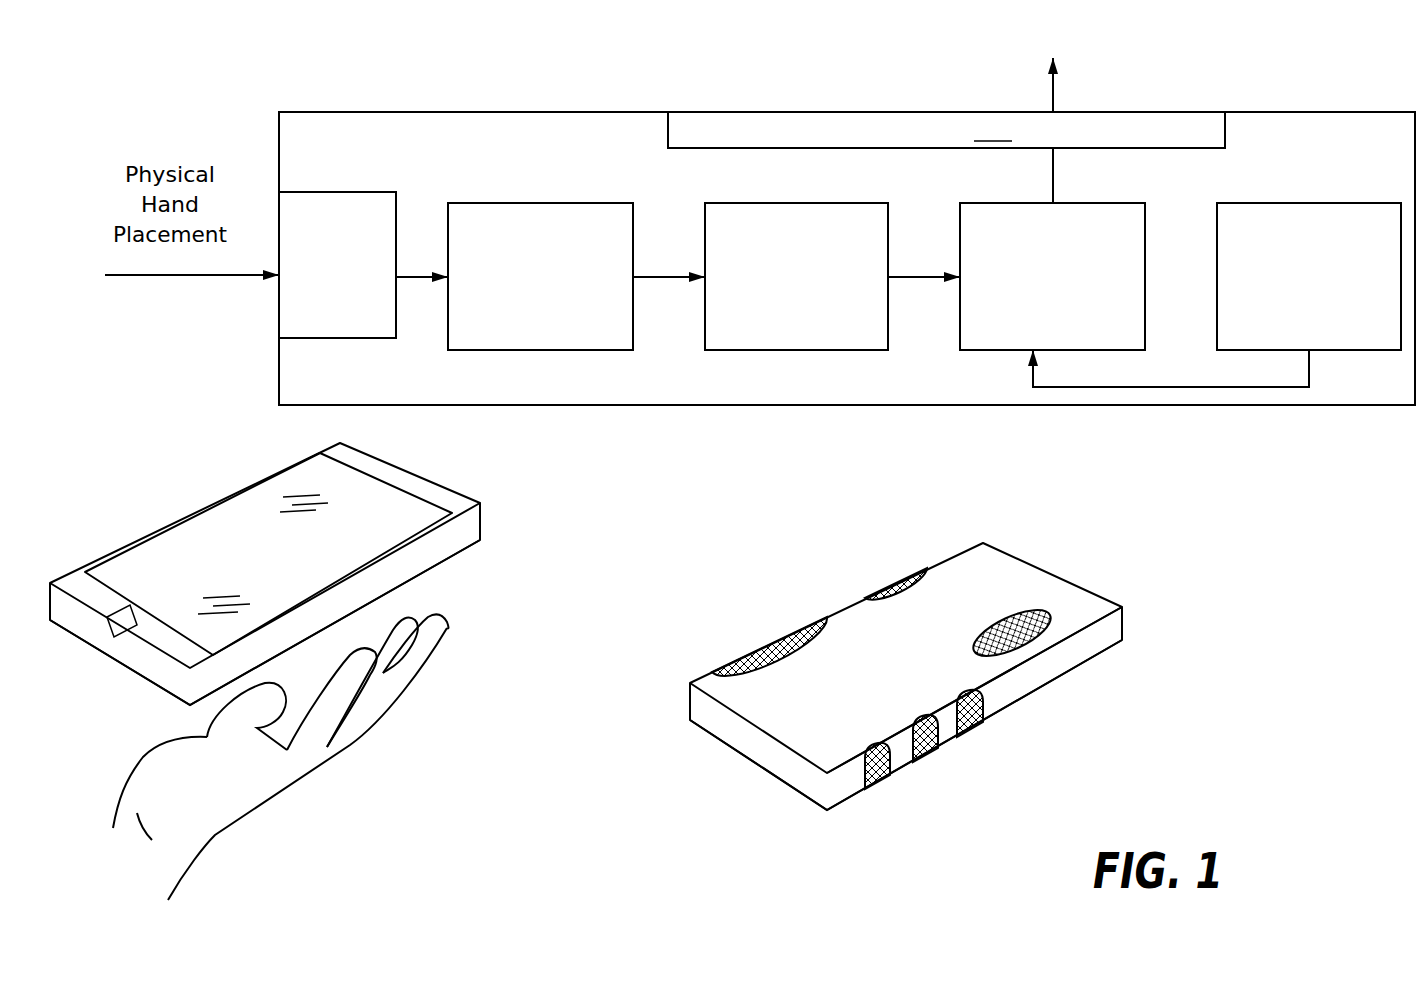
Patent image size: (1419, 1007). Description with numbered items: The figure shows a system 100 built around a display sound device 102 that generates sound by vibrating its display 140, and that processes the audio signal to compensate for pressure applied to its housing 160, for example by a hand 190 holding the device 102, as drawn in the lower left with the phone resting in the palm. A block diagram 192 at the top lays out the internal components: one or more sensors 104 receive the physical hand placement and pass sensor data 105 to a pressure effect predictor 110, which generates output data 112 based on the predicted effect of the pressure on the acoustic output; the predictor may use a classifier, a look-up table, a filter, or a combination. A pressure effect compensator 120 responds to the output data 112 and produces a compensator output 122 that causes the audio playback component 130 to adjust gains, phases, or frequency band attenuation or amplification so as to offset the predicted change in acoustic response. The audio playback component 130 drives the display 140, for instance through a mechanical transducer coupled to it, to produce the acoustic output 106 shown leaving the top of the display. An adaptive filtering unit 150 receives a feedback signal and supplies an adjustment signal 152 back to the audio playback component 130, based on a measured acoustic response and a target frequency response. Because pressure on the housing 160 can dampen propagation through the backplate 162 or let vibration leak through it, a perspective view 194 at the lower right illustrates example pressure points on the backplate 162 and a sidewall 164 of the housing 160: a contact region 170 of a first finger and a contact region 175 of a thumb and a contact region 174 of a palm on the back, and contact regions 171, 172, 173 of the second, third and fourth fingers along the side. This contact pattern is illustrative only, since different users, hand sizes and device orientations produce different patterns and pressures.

The system 100 is at (150, 462).
The display sound device 102 is at (1322, 112).
The sensors 104 is at (318, 287).
The sensor data 105 is at (423, 278).
The acoustic output 106 is at (1058, 90).
The pressure effect predictor 110 is at (520, 314).
The output data 112 is at (672, 282).
The pressure effect compensator 120 is at (776, 314).
The compensator output 122 is at (925, 282).
The audio playback component 130 is at (1033, 301).
The display 140 is at (280, 562).
The adaptive filtering unit 150 is at (1289, 314).
The adjustment signal 152 is at (1073, 388).
The housing 160 is at (465, 553).
The backplate 162 is at (916, 664).
The sidewall 164 is at (1068, 660).
The contact region of first finger 170 is at (1068, 605).
The contact region of second finger 171 is at (990, 738).
The contact region of third finger 172 is at (943, 770).
The contact region of fourth finger 173 is at (887, 800).
The contact region of palm 174 is at (740, 635).
The contact region of thumb 175 is at (873, 578).
The hand 190 is at (372, 772).
The block diagram 192 is at (404, 64).
The perspective view 194 is at (762, 545).